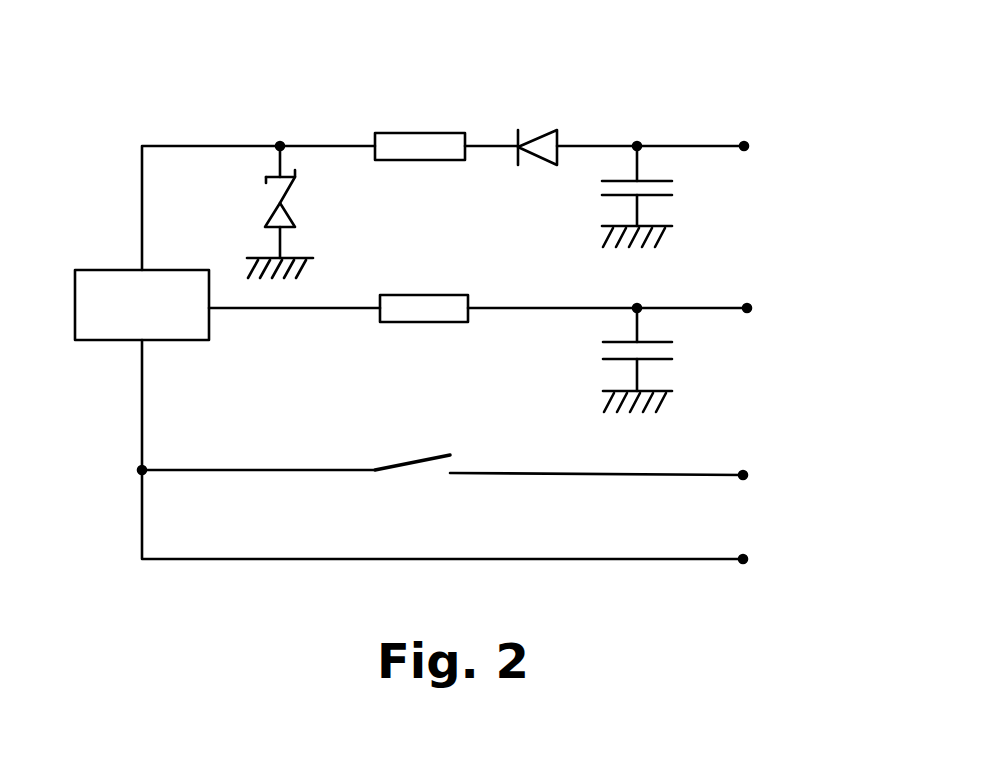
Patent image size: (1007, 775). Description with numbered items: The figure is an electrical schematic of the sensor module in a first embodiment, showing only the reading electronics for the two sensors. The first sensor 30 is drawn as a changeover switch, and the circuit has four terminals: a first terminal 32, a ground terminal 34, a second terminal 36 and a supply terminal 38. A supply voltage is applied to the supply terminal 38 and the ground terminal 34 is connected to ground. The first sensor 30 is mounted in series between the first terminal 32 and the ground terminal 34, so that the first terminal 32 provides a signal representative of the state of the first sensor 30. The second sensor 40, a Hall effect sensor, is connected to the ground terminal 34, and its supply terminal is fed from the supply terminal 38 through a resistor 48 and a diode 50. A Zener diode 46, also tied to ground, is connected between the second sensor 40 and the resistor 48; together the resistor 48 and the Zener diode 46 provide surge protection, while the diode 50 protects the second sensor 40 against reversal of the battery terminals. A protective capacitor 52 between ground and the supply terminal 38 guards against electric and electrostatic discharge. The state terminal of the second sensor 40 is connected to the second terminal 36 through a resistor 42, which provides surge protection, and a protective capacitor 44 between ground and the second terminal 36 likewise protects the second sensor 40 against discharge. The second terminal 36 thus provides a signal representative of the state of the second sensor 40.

The first sensor 30 is at (410, 462).
The first terminal 32 is at (743, 475).
The ground terminal 34 is at (743, 559).
The second terminal 36 is at (747, 308).
The supply terminal 38 is at (744, 146).
The second sensor 40 is at (107, 270).
The resistor 42 is at (412, 295).
The protective capacitor 44 is at (673, 350).
The Zener diode 46 is at (292, 168).
The resistor 48 is at (410, 133).
The diode 50 is at (530, 130).
The protective capacitor 52 is at (677, 192).